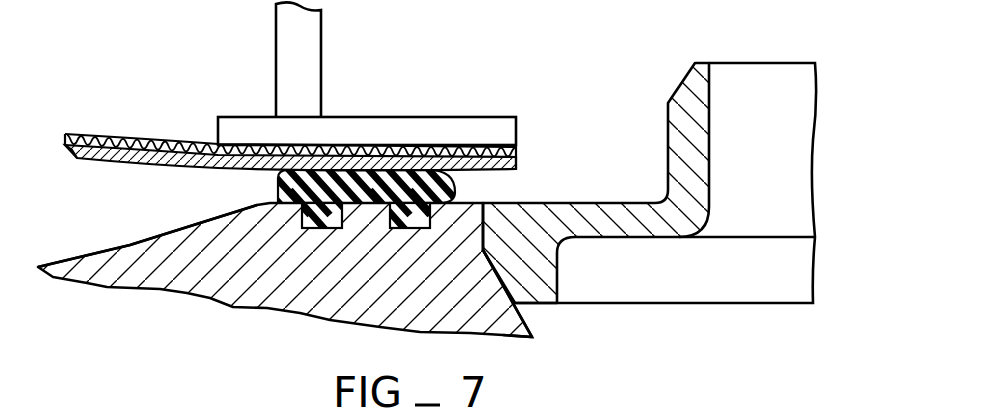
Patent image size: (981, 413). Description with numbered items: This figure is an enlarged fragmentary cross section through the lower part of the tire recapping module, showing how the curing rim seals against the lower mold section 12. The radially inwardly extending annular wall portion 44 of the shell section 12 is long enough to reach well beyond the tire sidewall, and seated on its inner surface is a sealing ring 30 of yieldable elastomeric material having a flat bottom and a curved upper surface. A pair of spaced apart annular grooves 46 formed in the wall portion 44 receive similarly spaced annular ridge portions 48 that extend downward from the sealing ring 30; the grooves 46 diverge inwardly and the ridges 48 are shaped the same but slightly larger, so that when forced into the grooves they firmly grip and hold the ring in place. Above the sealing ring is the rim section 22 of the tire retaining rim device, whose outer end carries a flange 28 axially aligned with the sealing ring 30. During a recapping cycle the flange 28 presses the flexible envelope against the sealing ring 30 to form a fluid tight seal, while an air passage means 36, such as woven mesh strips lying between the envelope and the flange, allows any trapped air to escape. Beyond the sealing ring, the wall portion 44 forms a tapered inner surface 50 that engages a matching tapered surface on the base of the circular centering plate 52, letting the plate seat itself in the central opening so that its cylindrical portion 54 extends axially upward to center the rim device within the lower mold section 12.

The lower rigid shell section 12 is at (113, 288).
The rim section 22 is at (276, 52).
The flange 28 is at (422, 116).
The sealing ring 30 is at (277, 190).
The air passage means 36 is at (518, 147).
The annular wall portion 44 is at (293, 305).
The annular grooves 46 is at (310, 225).
The annular ridge portions 48 is at (417, 216).
The tapered inner surface 50 is at (531, 322).
The centering plate 52 is at (644, 238).
The cylindrical portion 54 is at (668, 117).